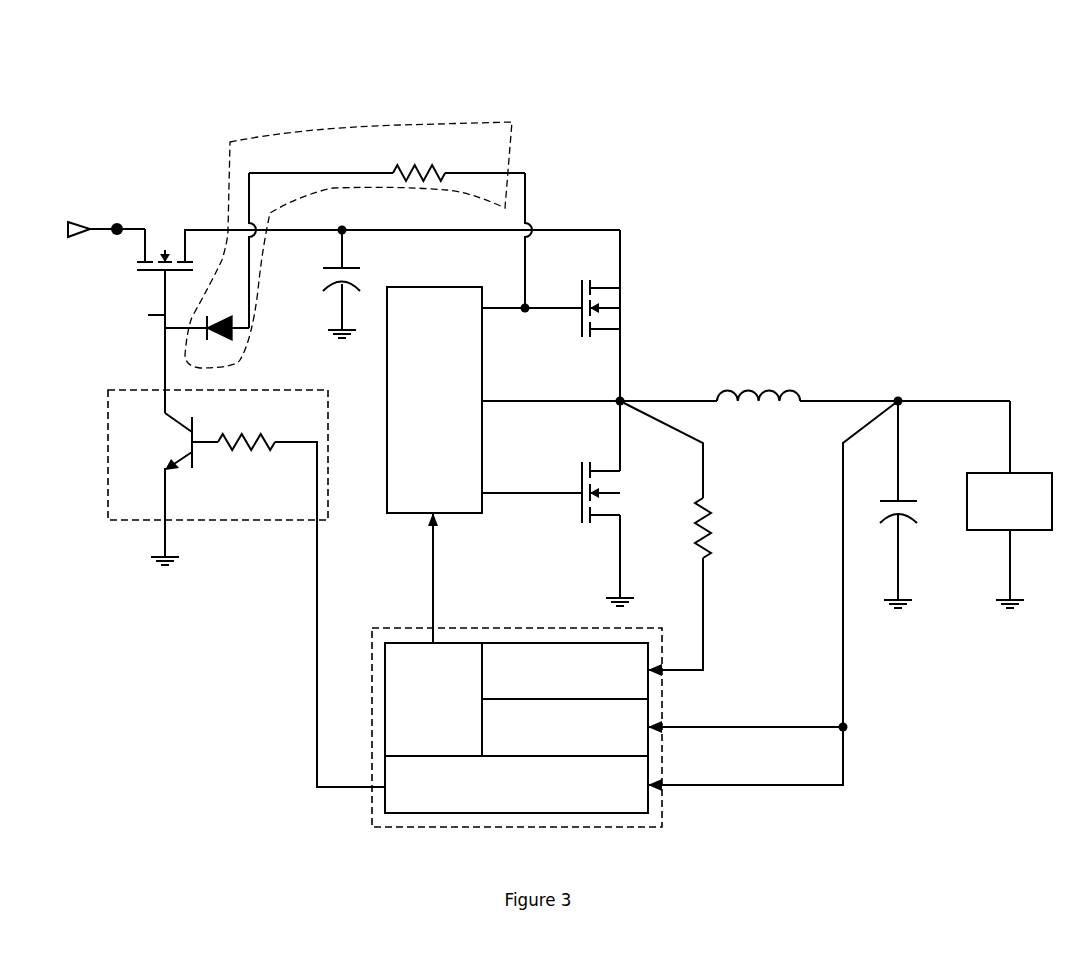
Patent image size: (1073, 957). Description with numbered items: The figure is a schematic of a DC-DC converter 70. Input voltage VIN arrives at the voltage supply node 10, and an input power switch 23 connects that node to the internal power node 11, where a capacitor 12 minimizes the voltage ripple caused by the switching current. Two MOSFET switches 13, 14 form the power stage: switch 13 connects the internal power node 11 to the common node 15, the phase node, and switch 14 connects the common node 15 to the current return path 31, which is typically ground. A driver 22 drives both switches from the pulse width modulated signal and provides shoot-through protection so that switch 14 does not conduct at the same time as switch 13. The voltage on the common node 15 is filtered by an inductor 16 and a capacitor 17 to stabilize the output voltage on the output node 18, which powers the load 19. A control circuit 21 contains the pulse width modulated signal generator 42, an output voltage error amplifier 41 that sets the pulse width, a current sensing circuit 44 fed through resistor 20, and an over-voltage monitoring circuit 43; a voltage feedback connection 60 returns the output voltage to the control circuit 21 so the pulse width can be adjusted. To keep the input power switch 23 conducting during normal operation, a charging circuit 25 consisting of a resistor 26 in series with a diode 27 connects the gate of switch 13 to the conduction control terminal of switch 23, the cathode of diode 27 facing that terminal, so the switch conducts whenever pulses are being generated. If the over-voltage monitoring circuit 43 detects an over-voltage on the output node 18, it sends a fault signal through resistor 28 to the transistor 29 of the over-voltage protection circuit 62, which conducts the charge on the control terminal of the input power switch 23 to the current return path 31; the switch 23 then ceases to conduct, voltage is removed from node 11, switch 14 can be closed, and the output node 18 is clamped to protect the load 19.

The voltage supply node 10 is at (118, 210).
The internal power node 11 is at (343, 224).
The capacitor 12 is at (333, 265).
The switch 13 is at (625, 312).
The switch 14 is at (618, 492).
The common node 15 is at (620, 400).
The inductor 16 is at (742, 392).
The capacitor 17 is at (902, 497).
The output node 18 is at (903, 398).
The load 19 is at (1015, 468).
The resistor 20 is at (718, 540).
The control circuit 21 is at (463, 628).
The driver 22 is at (473, 400).
The input power switch 23 is at (152, 227).
The charging circuit 25 is at (383, 88).
The resistor 26 is at (413, 153).
The diode 27 is at (212, 345).
The resistor 28 is at (237, 455).
The transistor 29 is at (168, 442).
The current return path 31 is at (140, 558).
The output voltage error amplifier 41 is at (637, 737).
The pulse width modulated signal generator 42 is at (434, 711).
The over-voltage monitoring circuit 43 is at (638, 800).
The current sensing circuit 44 is at (627, 678).
The voltage feedback connection 60 is at (842, 628).
The over-voltage protection circuit 62 is at (212, 525).
The DC-DC converter 70 is at (660, 135).